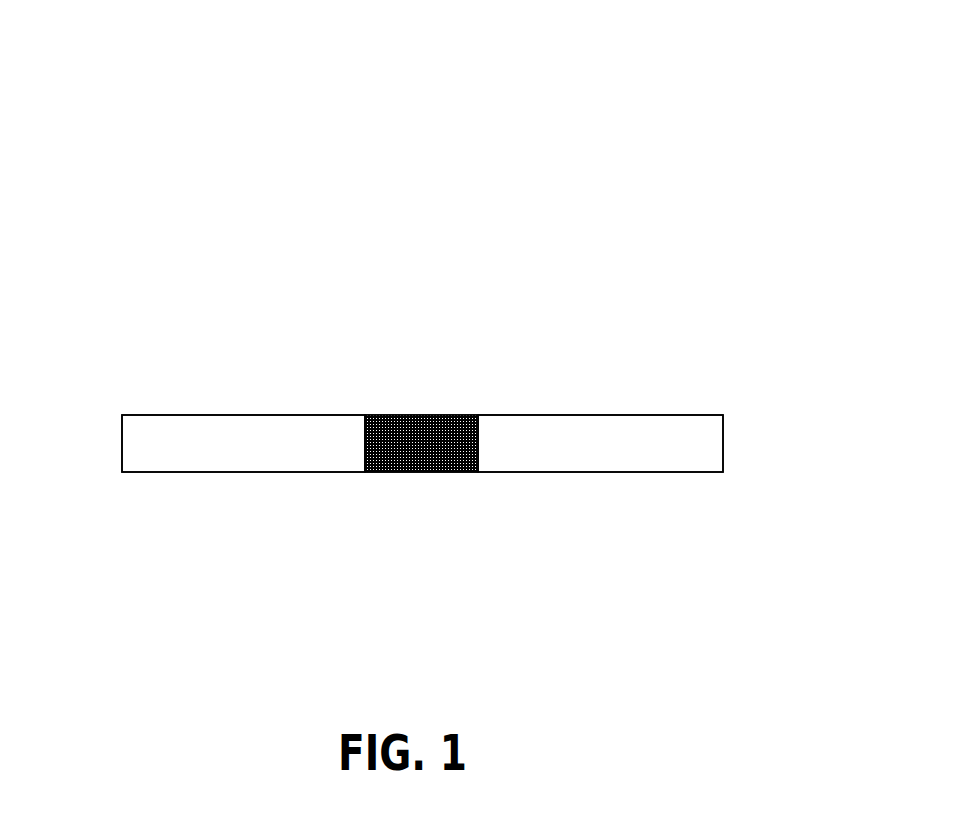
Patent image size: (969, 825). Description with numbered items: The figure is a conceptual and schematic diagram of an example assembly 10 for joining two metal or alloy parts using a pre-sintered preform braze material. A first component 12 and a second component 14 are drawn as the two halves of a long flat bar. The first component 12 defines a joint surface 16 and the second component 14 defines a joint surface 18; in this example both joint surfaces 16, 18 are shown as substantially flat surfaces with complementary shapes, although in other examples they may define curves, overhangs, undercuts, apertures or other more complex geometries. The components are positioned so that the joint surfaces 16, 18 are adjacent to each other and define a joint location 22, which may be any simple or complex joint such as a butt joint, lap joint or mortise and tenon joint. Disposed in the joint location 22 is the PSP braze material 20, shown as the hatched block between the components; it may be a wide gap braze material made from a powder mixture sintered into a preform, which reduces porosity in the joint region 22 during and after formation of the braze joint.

The assembly 10 is at (119, 75).
The first component 12 is at (122, 443).
The second component 14 is at (723, 444).
The joint surface 16 is at (365, 440).
The joint surface 18 is at (480, 440).
The PSP braze material 20 is at (455, 430).
The joint location 22 is at (394, 378).